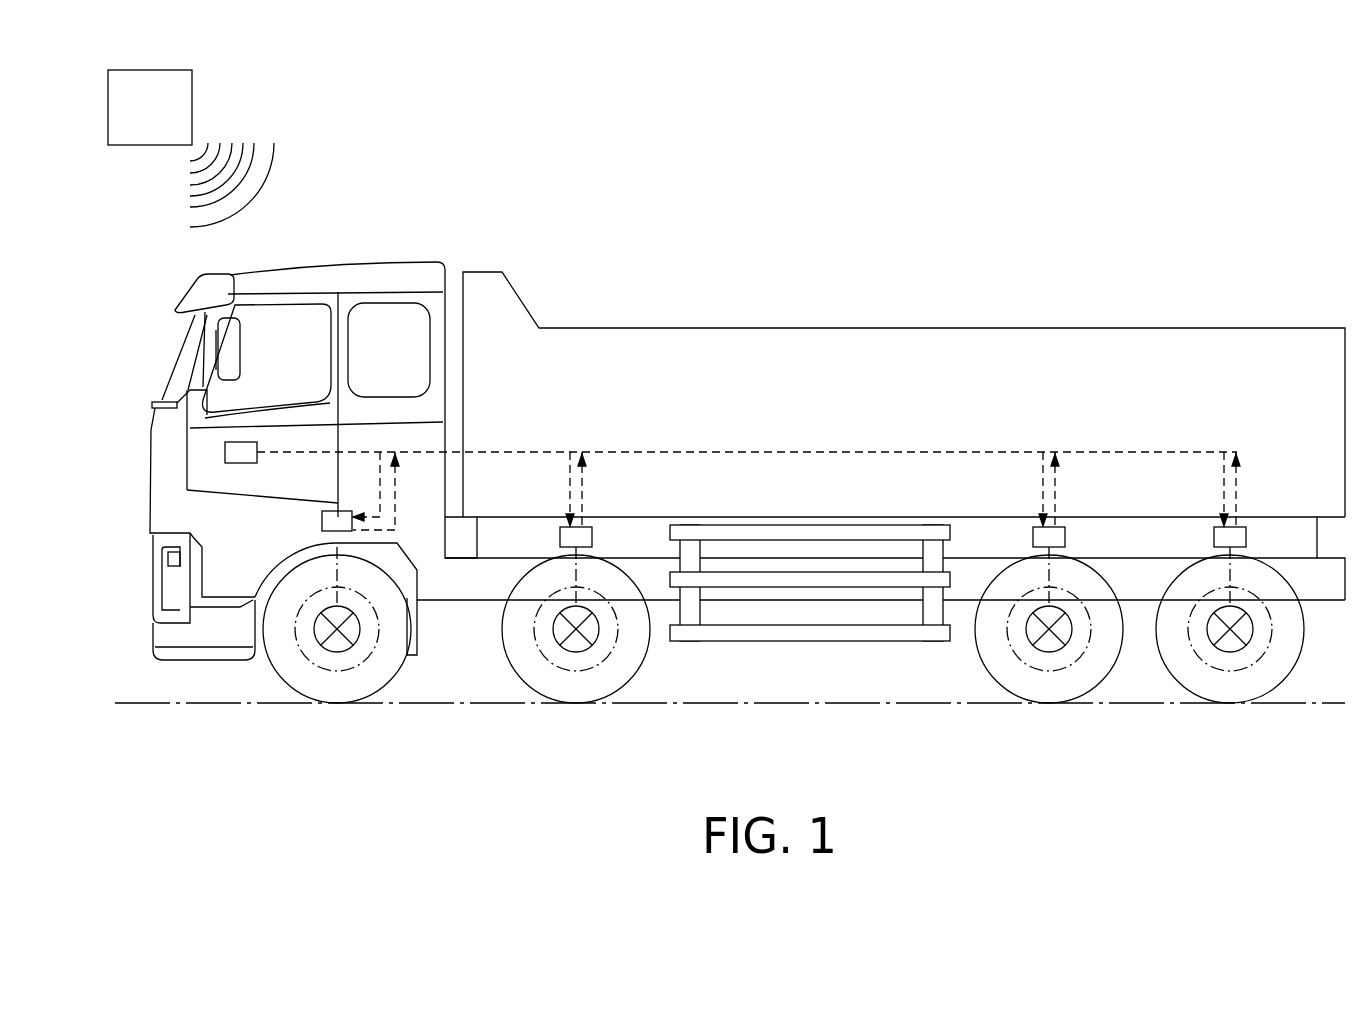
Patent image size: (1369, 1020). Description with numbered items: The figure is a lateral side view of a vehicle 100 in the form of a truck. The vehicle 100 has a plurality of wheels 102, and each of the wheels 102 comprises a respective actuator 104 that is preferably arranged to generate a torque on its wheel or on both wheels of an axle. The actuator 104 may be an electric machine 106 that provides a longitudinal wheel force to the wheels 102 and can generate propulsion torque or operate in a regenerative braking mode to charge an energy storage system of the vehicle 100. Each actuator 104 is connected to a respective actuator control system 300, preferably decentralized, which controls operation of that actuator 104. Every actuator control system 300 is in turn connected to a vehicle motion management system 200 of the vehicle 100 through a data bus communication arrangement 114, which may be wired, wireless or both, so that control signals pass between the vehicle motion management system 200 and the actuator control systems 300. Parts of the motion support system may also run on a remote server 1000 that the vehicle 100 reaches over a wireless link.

The vehicle 100 is at (820, 232).
The wheels 102 is at (340, 683).
The actuator 104 is at (333, 645).
The electric machine 106 is at (310, 633).
The data bus communication arrangement 114 is at (858, 452).
The vehicle motion management system 200 is at (225, 452).
The actuator control system 300 is at (322, 521).
The remote server 1000 is at (192, 107).